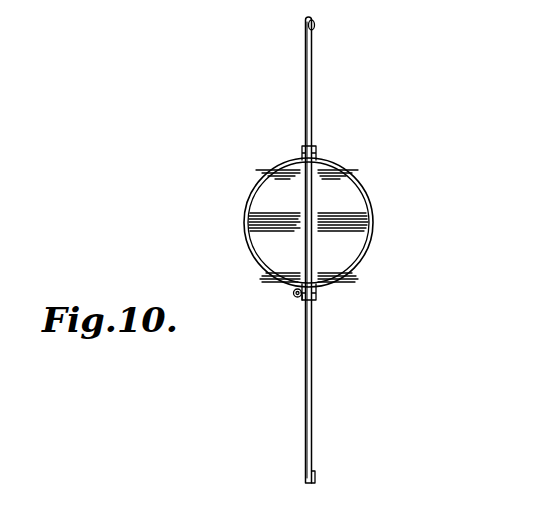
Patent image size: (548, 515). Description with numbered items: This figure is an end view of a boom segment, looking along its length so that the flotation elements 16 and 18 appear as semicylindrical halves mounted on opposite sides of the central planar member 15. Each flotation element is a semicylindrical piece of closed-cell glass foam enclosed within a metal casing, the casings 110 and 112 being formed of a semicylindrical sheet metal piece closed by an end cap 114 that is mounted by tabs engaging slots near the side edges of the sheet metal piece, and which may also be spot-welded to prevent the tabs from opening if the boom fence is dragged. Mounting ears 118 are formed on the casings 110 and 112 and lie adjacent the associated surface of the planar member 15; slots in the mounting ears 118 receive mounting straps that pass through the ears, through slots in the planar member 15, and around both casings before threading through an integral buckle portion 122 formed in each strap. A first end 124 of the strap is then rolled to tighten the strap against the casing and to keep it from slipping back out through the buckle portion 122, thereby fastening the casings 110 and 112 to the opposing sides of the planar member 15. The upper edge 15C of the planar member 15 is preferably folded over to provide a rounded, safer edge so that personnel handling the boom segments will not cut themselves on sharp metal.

The planar member 15 is at (313, 82).
The upper edge of the planar member 15C is at (315, 24).
The flotation element 16 is at (293, 226).
The flotation element 18 is at (365, 184).
The metal casing 110 is at (372, 250).
The metal casing 112 is at (272, 176).
The end cap 114 is at (278, 248).
The mounting ears 118 is at (303, 150).
The buckle portion 122 is at (297, 302).
The first end of the strap 124 is at (292, 297).